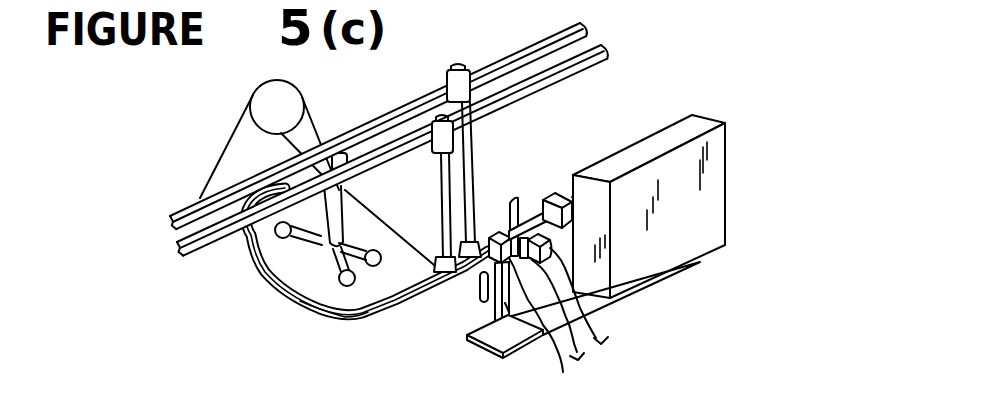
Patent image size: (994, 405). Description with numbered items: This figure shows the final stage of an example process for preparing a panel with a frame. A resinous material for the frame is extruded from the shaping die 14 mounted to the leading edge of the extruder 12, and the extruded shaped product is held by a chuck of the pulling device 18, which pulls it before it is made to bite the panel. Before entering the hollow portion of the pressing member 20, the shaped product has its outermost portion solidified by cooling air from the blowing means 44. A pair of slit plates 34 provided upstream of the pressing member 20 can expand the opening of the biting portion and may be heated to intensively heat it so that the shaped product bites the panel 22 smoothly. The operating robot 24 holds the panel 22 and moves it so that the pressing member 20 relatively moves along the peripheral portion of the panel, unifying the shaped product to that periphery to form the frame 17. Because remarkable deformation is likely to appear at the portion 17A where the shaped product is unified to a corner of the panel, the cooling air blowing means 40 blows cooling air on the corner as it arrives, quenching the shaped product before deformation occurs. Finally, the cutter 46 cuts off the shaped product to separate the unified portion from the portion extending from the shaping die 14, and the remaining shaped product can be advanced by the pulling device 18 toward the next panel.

The extruder 12 is at (650, 147).
The shaping die 14 is at (556, 191).
The frame 17 is at (276, 287).
The corner portion of the frame 17A is at (341, 319).
The pulling device 18 is at (475, 184).
The pressing member 20 is at (561, 366).
The panel 22 is at (388, 243).
The operating robot 24 is at (336, 135).
The slit plates 34 is at (516, 207).
The cooling air blowing means 40 is at (473, 297).
The blowing means 44 is at (553, 243).
The cutter 46 is at (450, 303).